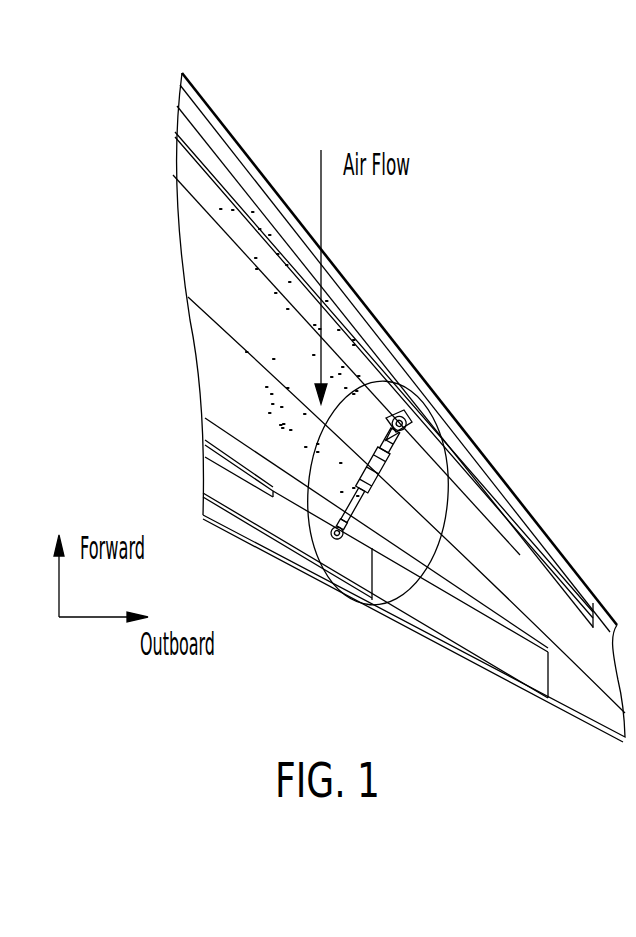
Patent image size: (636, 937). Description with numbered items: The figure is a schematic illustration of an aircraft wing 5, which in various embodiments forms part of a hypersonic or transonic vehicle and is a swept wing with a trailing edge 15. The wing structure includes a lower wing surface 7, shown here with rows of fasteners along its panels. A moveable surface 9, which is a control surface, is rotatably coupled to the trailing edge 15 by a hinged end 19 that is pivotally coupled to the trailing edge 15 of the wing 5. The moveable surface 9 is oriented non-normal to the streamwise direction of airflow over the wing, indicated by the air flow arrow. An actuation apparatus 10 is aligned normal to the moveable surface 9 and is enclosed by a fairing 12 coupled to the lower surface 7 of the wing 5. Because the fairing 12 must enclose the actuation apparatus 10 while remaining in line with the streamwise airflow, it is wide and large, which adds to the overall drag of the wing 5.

The aircraft wing 5 is at (148, 118).
The lower wing surface 7 is at (217, 358).
The moveable surface 9 is at (218, 475).
The actuation apparatus 10 is at (393, 433).
The fairing 12 is at (385, 380).
The trailing edge 15 is at (205, 447).
The hinged end 19 is at (197, 460).